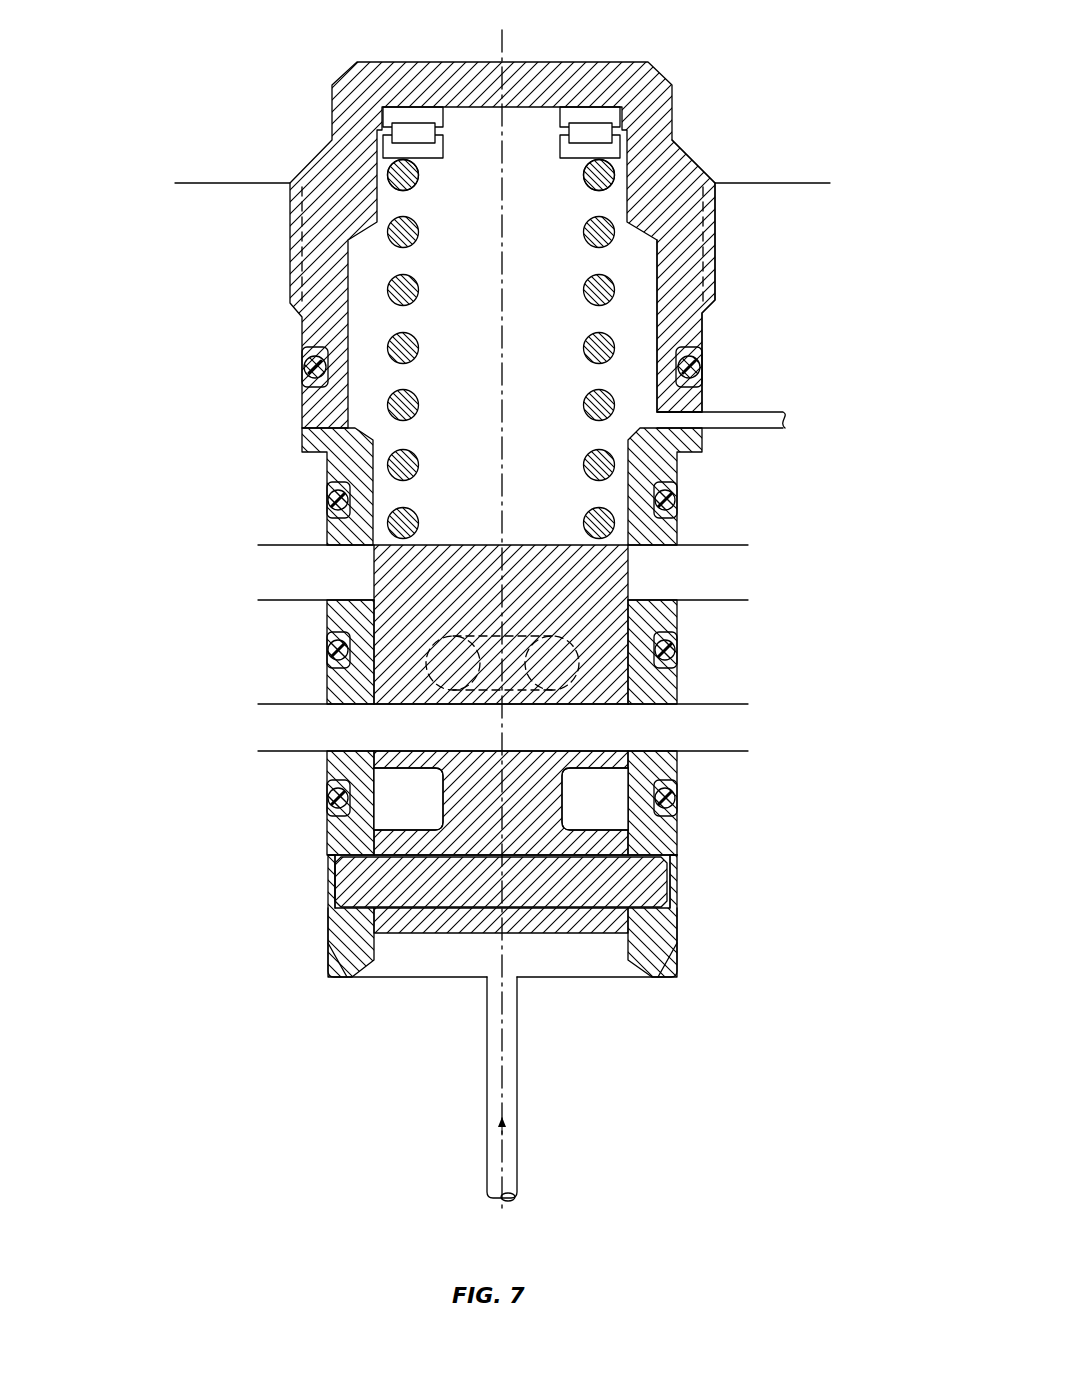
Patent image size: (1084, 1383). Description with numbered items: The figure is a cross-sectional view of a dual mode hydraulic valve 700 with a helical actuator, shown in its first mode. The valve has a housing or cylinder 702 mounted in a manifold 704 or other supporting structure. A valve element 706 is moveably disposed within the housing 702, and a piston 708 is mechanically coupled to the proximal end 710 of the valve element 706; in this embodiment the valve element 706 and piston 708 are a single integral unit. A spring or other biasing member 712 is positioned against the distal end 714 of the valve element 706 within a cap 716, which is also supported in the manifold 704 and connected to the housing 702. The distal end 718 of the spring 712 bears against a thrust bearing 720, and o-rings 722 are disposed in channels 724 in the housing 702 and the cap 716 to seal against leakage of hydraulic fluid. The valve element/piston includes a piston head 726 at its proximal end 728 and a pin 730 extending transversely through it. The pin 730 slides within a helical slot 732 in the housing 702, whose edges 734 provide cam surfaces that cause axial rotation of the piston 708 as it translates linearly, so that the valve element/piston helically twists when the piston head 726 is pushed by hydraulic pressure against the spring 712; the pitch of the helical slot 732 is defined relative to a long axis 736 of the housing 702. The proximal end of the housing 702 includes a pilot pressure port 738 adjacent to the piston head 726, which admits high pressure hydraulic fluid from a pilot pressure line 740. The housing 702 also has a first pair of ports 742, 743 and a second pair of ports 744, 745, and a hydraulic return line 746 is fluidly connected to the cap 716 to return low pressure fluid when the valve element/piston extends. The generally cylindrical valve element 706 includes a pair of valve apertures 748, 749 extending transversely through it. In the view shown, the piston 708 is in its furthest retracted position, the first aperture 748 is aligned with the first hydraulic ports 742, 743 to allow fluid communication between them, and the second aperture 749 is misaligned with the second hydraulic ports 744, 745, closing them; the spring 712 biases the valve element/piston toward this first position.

The hydraulic valve 700 is at (200, 78).
The housing 702 is at (343, 467).
The manifold 704 is at (775, 192).
The valve element 706 is at (586, 591).
The piston 708 is at (557, 850).
The proximal end 710 is at (590, 770).
The spring 712 is at (388, 290).
The distal end 714 is at (557, 543).
The cap 716 is at (683, 243).
The distal end of the spring 718 is at (390, 175).
The thrust bearing 720 is at (410, 127).
The o-rings 722 is at (699, 362).
The channels 724 is at (699, 383).
The piston head 726 is at (613, 923).
The proximal end 728 is at (572, 940).
The pin 730 is at (367, 883).
The helical slot 732 is at (672, 882).
The edges 734 is at (663, 855).
The long axis 736 is at (507, 43).
The pilot pressure port 738 is at (497, 976).
The pilot pressure line 740 is at (510, 1175).
The first hydraulic port 742 is at (650, 727).
The first hydraulic port 743 is at (345, 727).
The second hydraulic port 744 is at (655, 572).
The second hydraulic port 745 is at (355, 572).
The hydraulic return line 746 is at (752, 422).
The first valve aperture 748 is at (567, 742).
The second valve aperture 749 is at (494, 633).